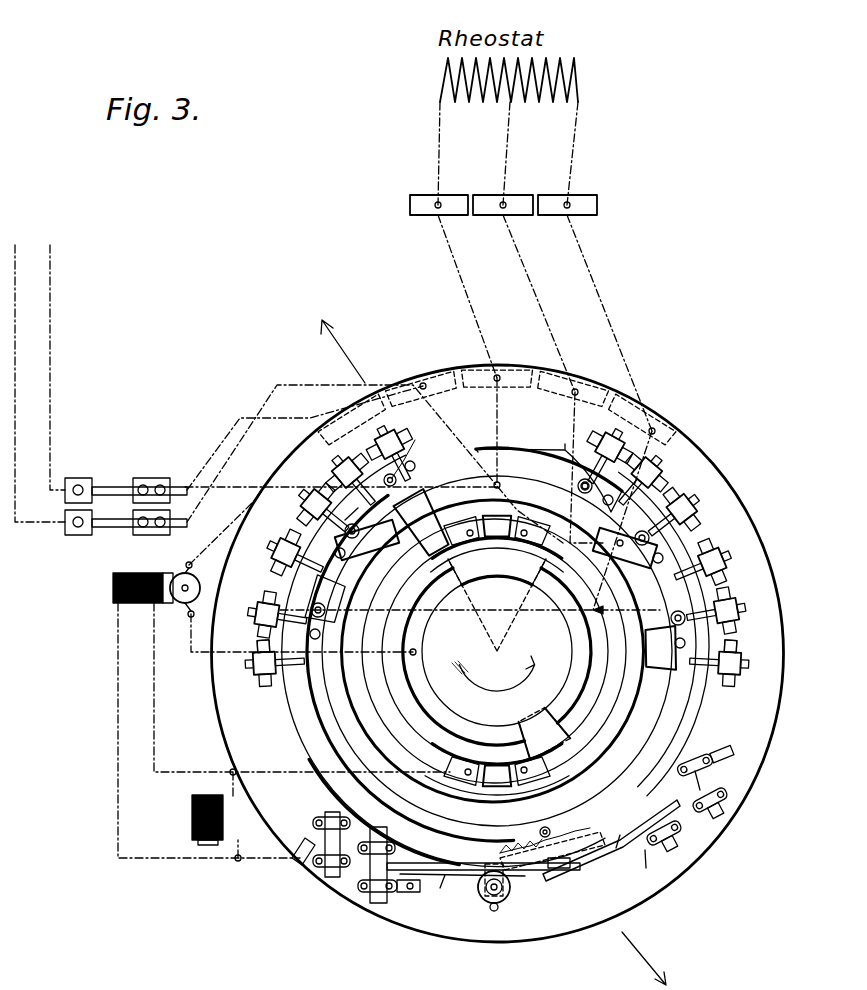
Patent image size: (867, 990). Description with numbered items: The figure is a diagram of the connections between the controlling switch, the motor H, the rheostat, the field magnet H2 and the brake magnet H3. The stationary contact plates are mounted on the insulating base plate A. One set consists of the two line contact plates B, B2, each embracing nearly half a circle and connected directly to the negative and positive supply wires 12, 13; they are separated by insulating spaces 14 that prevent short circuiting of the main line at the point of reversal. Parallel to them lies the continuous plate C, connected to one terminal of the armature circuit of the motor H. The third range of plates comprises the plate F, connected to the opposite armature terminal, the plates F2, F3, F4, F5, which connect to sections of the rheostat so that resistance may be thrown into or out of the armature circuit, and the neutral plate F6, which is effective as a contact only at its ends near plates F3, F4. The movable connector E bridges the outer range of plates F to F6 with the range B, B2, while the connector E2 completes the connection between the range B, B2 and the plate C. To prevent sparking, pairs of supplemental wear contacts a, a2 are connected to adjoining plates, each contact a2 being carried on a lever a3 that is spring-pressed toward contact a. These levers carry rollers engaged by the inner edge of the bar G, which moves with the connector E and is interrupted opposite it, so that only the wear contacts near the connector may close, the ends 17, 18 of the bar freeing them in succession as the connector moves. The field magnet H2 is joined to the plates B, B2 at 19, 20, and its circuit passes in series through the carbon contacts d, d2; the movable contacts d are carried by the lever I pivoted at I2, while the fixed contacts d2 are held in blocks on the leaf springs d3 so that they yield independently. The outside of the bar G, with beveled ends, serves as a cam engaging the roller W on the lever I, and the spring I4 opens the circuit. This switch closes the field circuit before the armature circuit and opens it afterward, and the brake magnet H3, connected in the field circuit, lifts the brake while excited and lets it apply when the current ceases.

The supply wire 12 is at (236, 367).
The supply wire 13 is at (289, 394).
The insulating spaces 14 is at (497, 651).
The end of bar G 17 is at (345, 520).
The end of bar G 18 is at (474, 451).
The field magnet connection 19 is at (466, 772).
The field magnet connection 20 is at (488, 634).
The supplemental wear contact a is at (494, 557).
The supplemental wear contact a2 is at (497, 527).
The movable lever a3 is at (516, 578).
The base plate A is at (745, 652).
The line contact plate B is at (494, 651).
The line contact plate B2 is at (493, 651).
The contact plate C is at (497, 646).
The movable connector E is at (421, 522).
The movable connector E2 is at (545, 734).
The contact plate F is at (497, 651).
The contact plate F2 is at (375, 510).
The contact plate F3 is at (409, 668).
The contact plate F4 is at (666, 640).
The contact plate F5 is at (620, 526).
The neutral contact plate F6 is at (497, 799).
The bar G is at (540, 468).
The motor H is at (180, 574).
The field magnet H2 is at (119, 588).
The brake magnet H3 is at (219, 820).
The lever I is at (483, 881).
The pivot I2 is at (557, 882).
The spring I4 is at (540, 840).
The roller W is at (497, 900).
The movable contact d is at (330, 880).
The fixed contact d2 is at (517, 818).
The leaf springs d3 is at (546, 872).